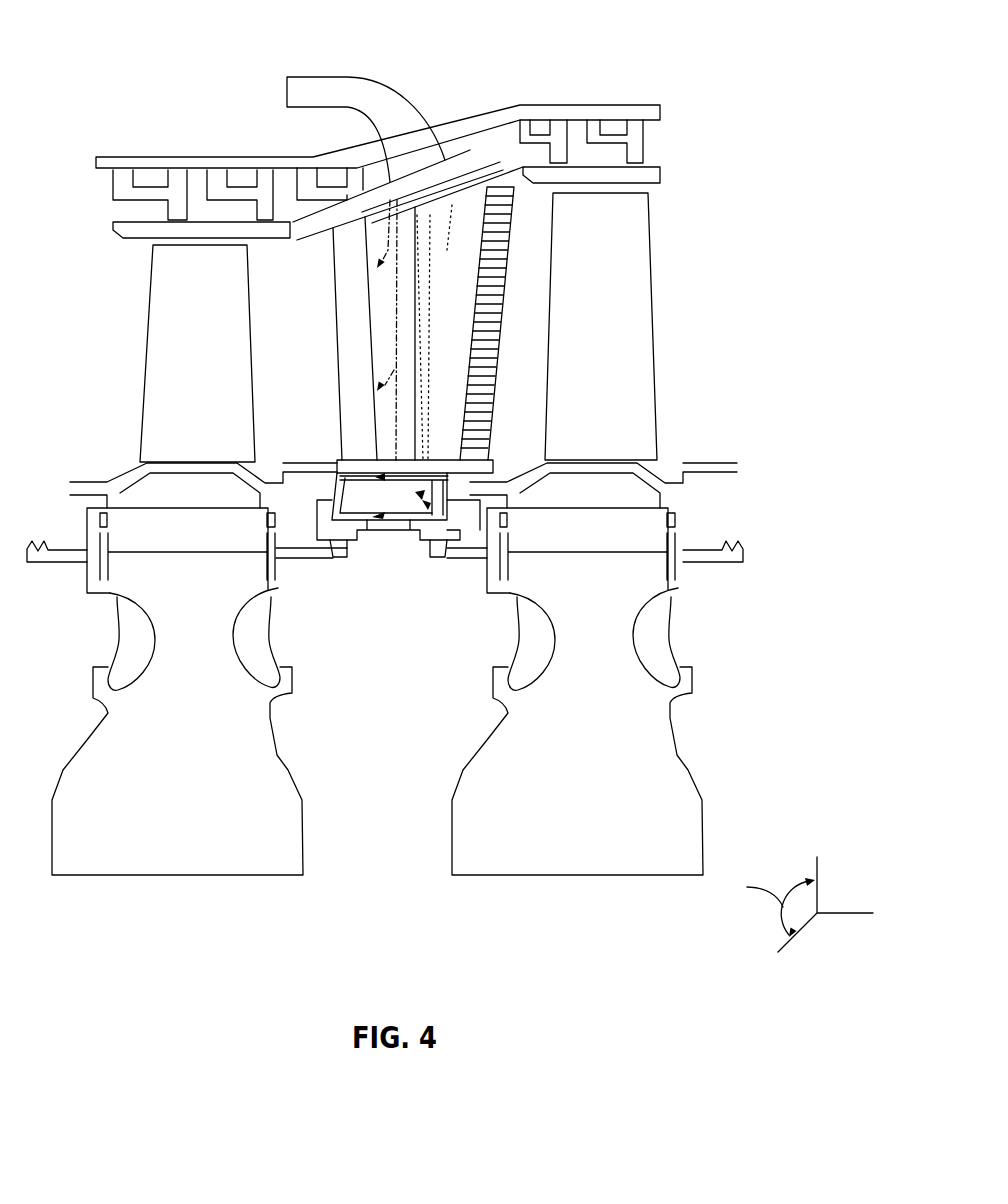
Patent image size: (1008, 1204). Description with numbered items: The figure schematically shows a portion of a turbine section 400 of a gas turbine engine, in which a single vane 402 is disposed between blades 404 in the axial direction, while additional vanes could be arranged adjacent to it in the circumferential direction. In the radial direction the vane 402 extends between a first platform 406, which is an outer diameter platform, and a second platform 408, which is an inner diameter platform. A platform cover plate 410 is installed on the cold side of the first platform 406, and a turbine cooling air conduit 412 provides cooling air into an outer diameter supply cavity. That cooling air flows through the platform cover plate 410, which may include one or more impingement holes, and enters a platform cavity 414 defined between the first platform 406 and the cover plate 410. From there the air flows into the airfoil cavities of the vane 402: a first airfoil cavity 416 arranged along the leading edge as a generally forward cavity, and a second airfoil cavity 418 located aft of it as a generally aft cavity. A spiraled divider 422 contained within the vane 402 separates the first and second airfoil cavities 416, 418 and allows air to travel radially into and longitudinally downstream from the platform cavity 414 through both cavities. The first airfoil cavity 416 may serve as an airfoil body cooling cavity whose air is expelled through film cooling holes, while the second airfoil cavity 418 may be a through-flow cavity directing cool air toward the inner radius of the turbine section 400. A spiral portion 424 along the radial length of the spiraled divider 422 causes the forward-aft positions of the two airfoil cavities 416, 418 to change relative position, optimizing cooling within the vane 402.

The turbine section 400 is at (130, 52).
The vane 402 is at (512, 247).
The blades 404 is at (167, 355).
The first platform 406 is at (310, 232).
The second platform 408 is at (325, 478).
The platform cover plate 410 is at (377, 160).
The turbine cooling air conduit 412 is at (365, 98).
The platform cavity 414 is at (480, 174).
The first airfoil cavity 416 is at (385, 337).
The second airfoil cavity 418 is at (455, 302).
The spiraled divider 422 is at (400, 323).
The spiral portion 424 is at (425, 227).